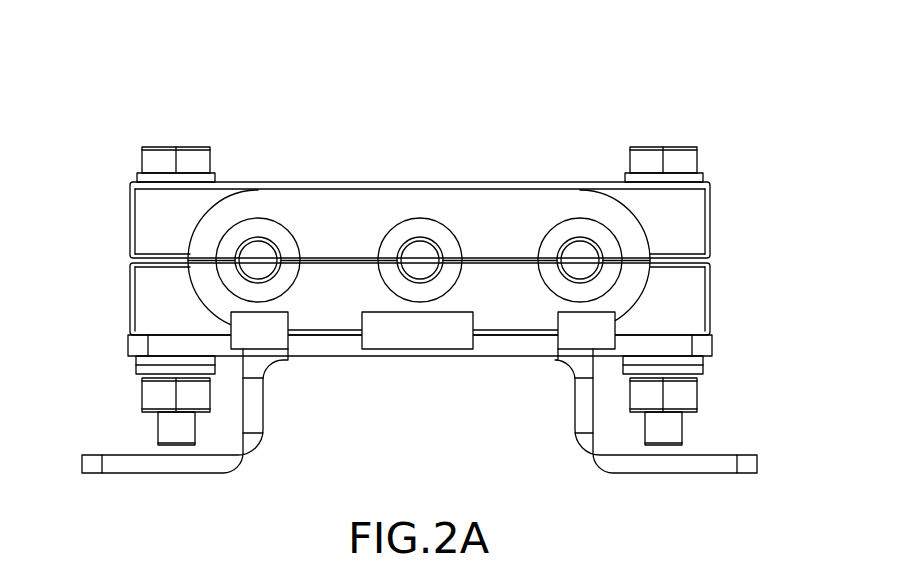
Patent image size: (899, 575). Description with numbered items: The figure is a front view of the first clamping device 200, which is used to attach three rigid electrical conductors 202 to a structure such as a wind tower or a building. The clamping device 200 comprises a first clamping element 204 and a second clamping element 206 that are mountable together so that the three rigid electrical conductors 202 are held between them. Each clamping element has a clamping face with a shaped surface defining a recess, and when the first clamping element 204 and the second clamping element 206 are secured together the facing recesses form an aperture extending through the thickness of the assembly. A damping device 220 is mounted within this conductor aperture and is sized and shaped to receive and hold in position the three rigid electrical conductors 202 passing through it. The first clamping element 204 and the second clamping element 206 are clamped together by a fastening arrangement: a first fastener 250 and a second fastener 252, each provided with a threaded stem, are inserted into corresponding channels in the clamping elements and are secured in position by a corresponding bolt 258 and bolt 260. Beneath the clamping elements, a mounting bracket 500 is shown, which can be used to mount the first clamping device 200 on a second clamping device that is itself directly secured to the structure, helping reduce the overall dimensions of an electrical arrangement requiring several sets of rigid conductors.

The first clamping device 200 is at (392, 82).
The rigid electrical conductors 202 is at (263, 257).
The first clamping element 204 is at (693, 303).
The second clamping element 206 is at (695, 223).
The damping device 220 is at (496, 212).
The first fastener 250 is at (197, 152).
The second fastener 252 is at (676, 155).
The bolt 258 is at (155, 398).
The bolt 260 is at (687, 392).
The mounting bracket 500 is at (253, 388).